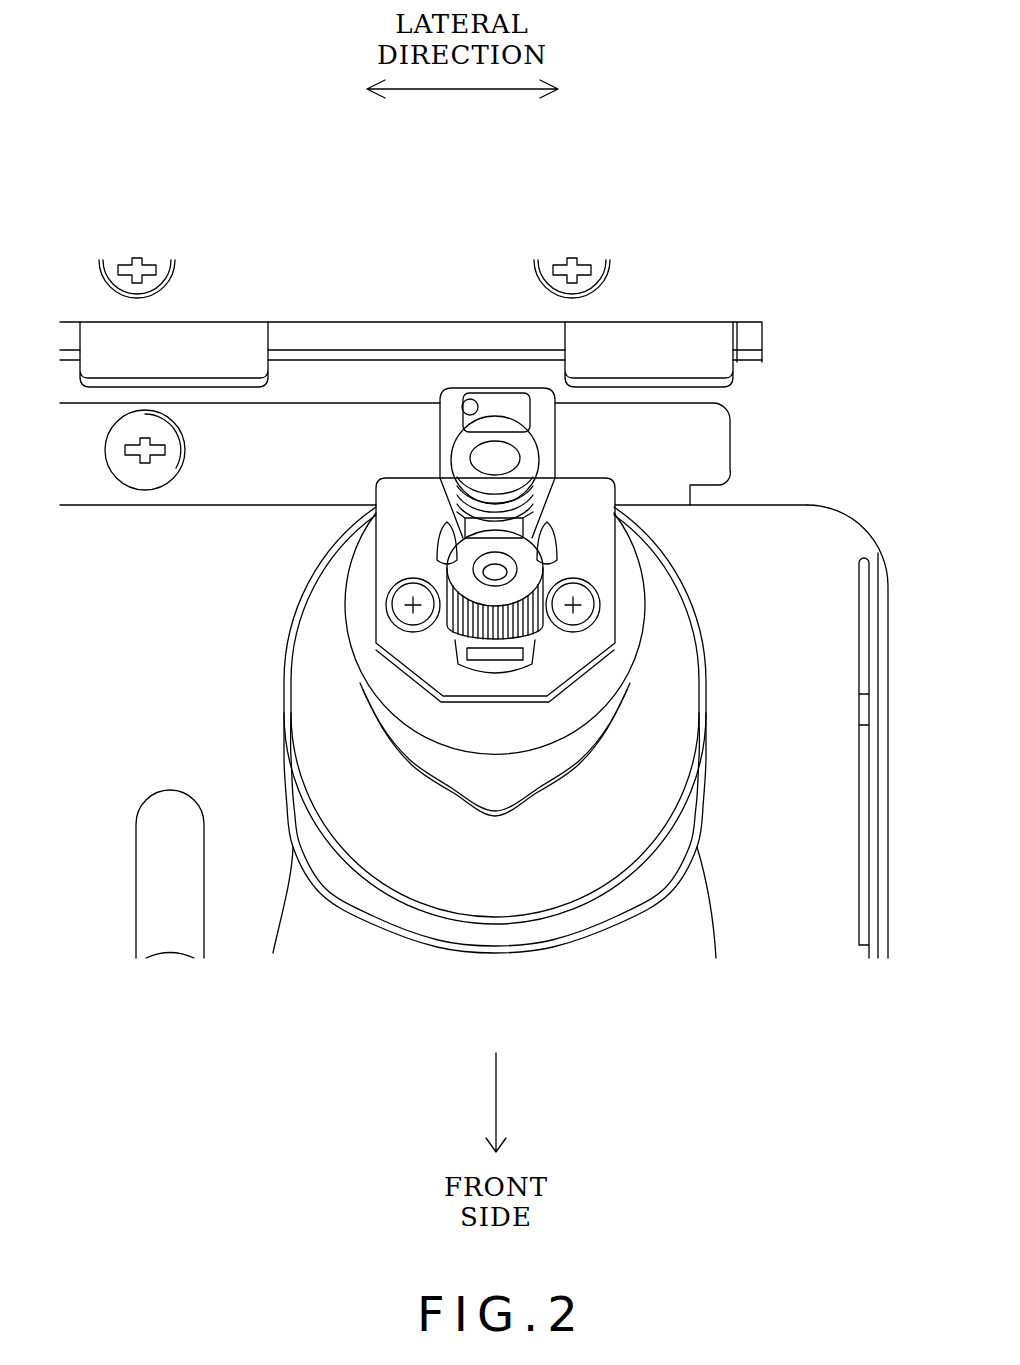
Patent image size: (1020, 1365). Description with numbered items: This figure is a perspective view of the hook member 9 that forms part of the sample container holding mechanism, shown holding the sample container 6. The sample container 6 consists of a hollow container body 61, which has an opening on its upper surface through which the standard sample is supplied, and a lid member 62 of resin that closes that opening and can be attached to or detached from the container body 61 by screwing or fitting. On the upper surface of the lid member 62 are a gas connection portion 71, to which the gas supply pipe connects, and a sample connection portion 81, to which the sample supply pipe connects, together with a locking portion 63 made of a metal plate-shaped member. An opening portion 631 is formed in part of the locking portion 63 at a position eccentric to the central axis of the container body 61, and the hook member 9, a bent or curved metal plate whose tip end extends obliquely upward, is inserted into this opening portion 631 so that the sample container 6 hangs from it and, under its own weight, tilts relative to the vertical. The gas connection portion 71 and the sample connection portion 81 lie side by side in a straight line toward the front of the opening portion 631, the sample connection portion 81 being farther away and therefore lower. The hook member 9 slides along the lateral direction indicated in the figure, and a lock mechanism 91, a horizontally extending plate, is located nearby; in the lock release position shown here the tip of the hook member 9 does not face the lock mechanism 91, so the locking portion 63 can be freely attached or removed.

The sample container 6 is at (348, 1013).
The container body 61 is at (705, 911).
The lid member 62 is at (298, 725).
The locking portion 63 is at (434, 406).
The opening portion 631 is at (470, 399).
The gas connection portion 71 is at (530, 468).
The sample connection portion 81 is at (543, 578).
The hook member 9 is at (493, 392).
The lock mechanism 91 is at (711, 322).